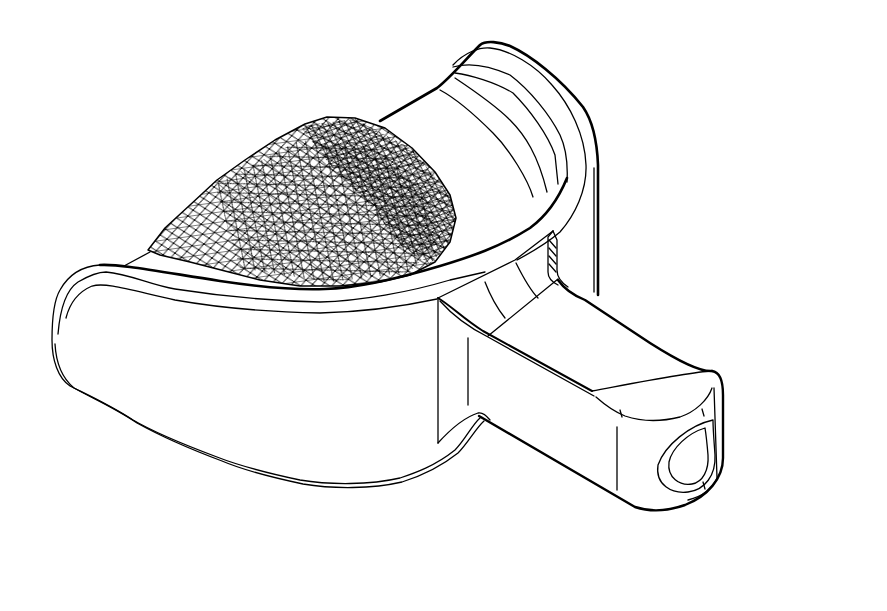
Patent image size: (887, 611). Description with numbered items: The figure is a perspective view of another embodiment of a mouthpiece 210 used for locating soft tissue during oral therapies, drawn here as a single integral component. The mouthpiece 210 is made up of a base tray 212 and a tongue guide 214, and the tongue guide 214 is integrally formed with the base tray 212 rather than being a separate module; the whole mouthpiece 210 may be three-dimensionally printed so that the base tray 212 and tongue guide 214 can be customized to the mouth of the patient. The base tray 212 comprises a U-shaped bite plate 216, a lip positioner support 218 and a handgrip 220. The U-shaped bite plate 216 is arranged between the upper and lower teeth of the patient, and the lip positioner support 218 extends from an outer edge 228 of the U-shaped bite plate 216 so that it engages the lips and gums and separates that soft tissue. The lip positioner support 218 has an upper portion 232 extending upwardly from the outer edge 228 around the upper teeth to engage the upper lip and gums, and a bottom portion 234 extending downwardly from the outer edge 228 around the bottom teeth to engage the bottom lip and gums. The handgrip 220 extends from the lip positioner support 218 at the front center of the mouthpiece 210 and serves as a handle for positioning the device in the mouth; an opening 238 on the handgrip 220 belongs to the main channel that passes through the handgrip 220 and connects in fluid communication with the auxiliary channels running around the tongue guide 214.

The mouthpiece 210 is at (106, 132).
The base tray 212 is at (627, 122).
The tongue guide 214 is at (258, 146).
The U-shaped bite plate 216 is at (381, 105).
The lip positioner support 218 is at (591, 78).
The handgrip 220 is at (670, 328).
The outer edge 228 is at (495, 124).
The upper portion 232 is at (152, 255).
The bottom portion 234 is at (164, 436).
The opening 238 is at (702, 463).